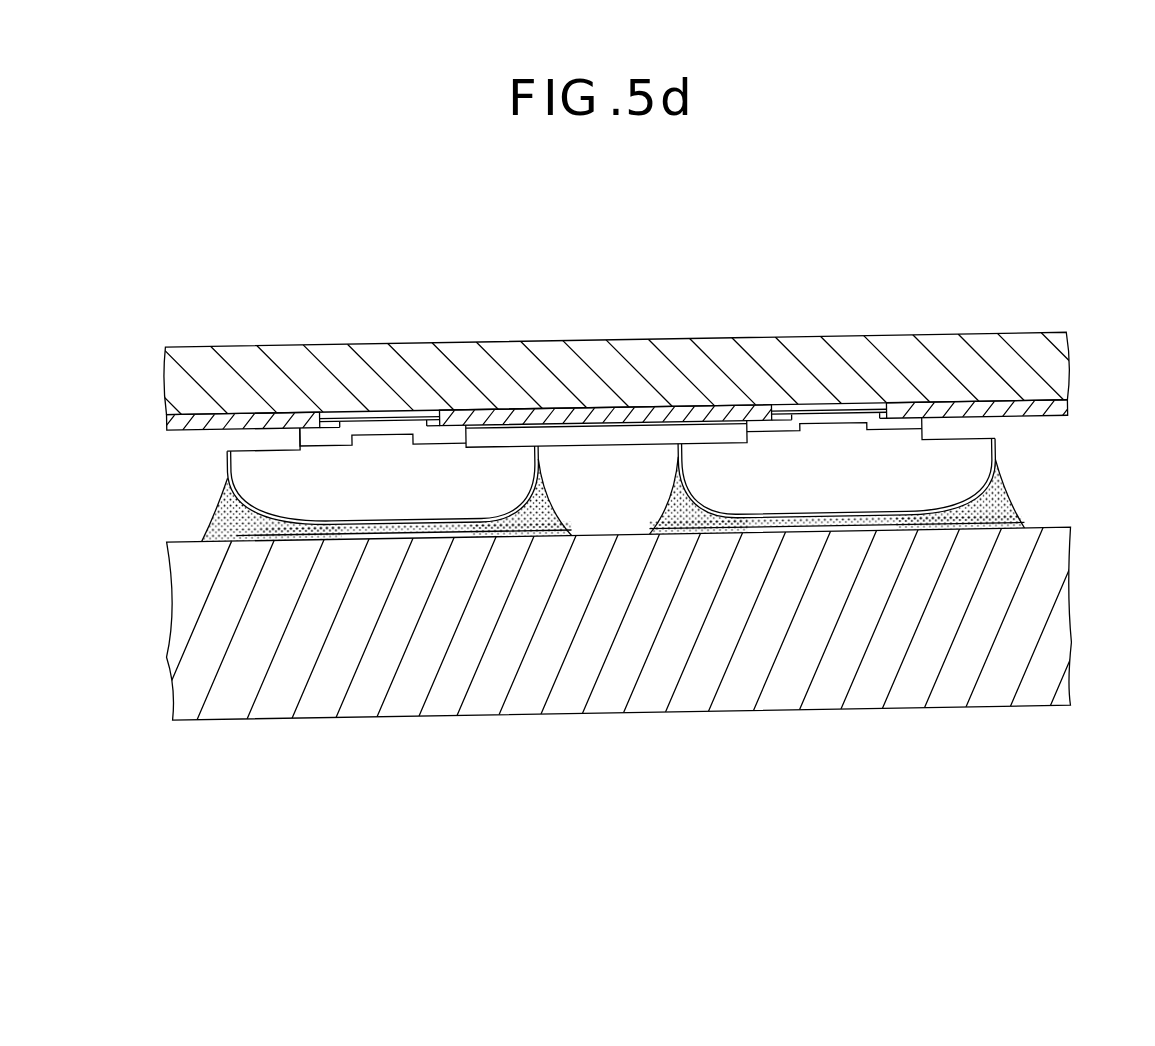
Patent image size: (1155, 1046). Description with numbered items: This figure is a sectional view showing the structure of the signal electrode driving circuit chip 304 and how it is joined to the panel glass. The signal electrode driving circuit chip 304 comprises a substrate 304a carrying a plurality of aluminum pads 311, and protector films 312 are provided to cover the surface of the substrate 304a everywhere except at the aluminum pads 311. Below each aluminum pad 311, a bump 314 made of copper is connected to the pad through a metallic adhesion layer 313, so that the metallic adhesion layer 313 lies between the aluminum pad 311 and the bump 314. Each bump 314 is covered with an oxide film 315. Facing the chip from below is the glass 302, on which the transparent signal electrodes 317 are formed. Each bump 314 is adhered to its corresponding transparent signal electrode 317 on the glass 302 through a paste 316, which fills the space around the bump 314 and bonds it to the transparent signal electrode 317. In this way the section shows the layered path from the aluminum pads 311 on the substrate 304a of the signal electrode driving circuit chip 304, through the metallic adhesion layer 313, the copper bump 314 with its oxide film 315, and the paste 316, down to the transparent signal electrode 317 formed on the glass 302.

The glass 302 is at (1010, 661).
The signal electrode driving circuit chip 304 is at (492, 345).
The substrate 304a is at (598, 362).
The aluminum pad 311 is at (393, 410).
The protector film 312 is at (688, 413).
The metallic adhesion layer 313 is at (317, 438).
The bump 314 is at (267, 472).
The oxide film 315 is at (225, 468).
The paste 316 is at (210, 526).
The transparent signal electrode 317 is at (225, 542).